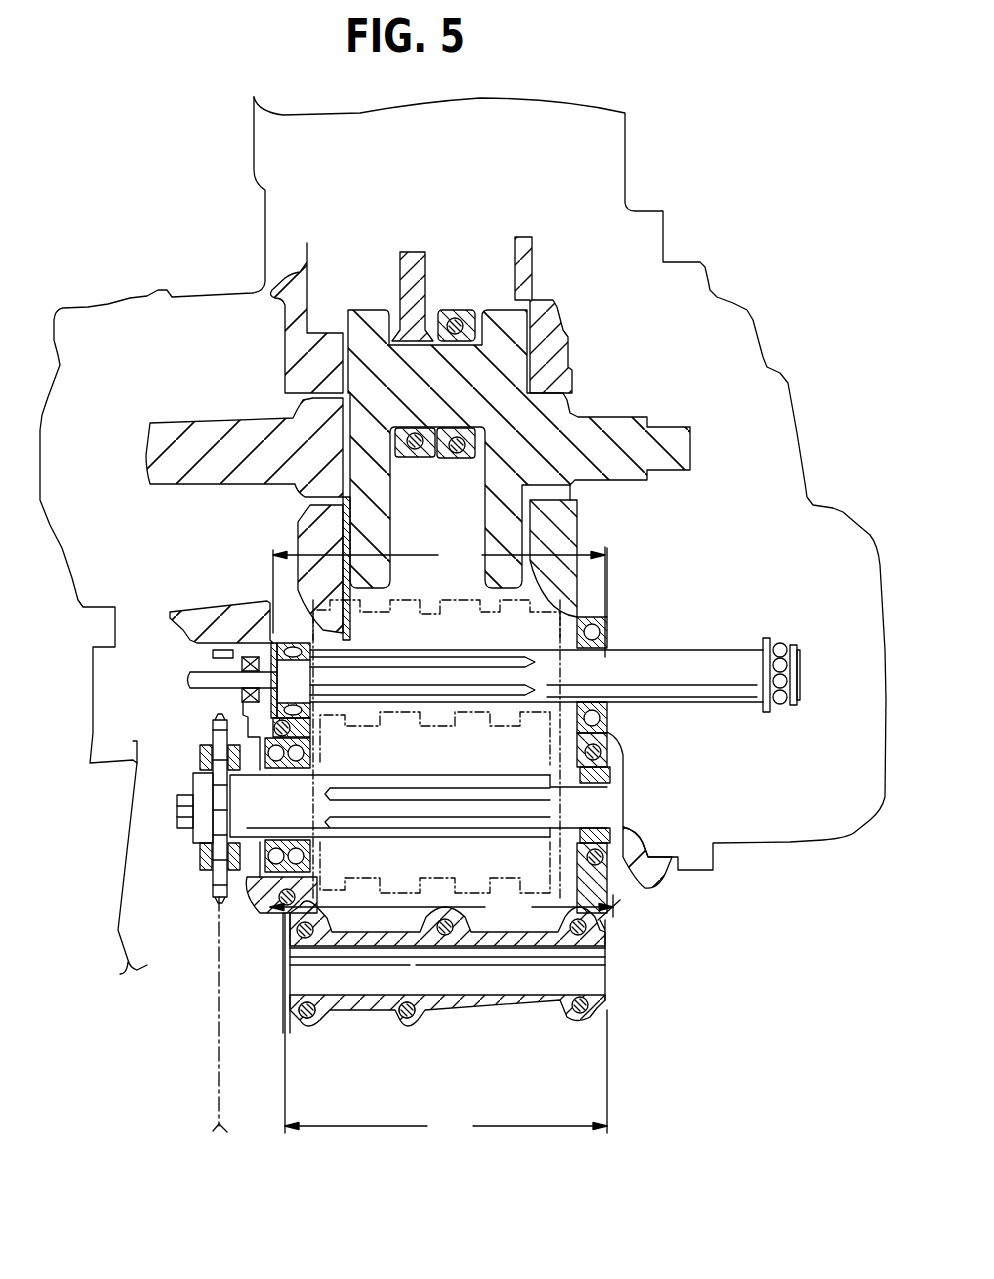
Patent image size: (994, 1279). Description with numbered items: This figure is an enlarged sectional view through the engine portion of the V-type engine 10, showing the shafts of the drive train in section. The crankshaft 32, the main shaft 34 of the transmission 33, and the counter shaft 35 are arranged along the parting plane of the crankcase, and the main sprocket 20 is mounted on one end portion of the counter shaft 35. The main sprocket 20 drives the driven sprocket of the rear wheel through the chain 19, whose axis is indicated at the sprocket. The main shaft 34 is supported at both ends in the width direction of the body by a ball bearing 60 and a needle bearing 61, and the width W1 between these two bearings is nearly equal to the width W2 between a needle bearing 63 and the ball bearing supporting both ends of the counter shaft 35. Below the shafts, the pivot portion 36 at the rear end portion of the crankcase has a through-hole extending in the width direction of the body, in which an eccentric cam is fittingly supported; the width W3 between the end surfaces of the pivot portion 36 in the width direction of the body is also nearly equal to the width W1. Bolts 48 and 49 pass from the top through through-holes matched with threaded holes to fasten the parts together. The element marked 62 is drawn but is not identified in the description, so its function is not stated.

The V-type engine 10 is at (221, 195).
The chain 19 is at (220, 1050).
The main sprocket 20 is at (217, 893).
The crankshaft 32 is at (660, 427).
The transmission 33 is at (423, 577).
The main shaft 34 is at (703, 648).
The counter shaft 35 is at (572, 804).
The pivot portion 36 is at (468, 1022).
The bolt 48 is at (330, 1013).
The bolt 49 is at (307, 1017).
The ball bearing 60 is at (607, 627).
The needle bearing 61 is at (277, 637).
The bearing 62 is at (612, 781).
The needle bearing 63 is at (243, 908).
The width W1 is at (439, 598).
The width W2 is at (441, 907).
The width W3 is at (446, 1126).